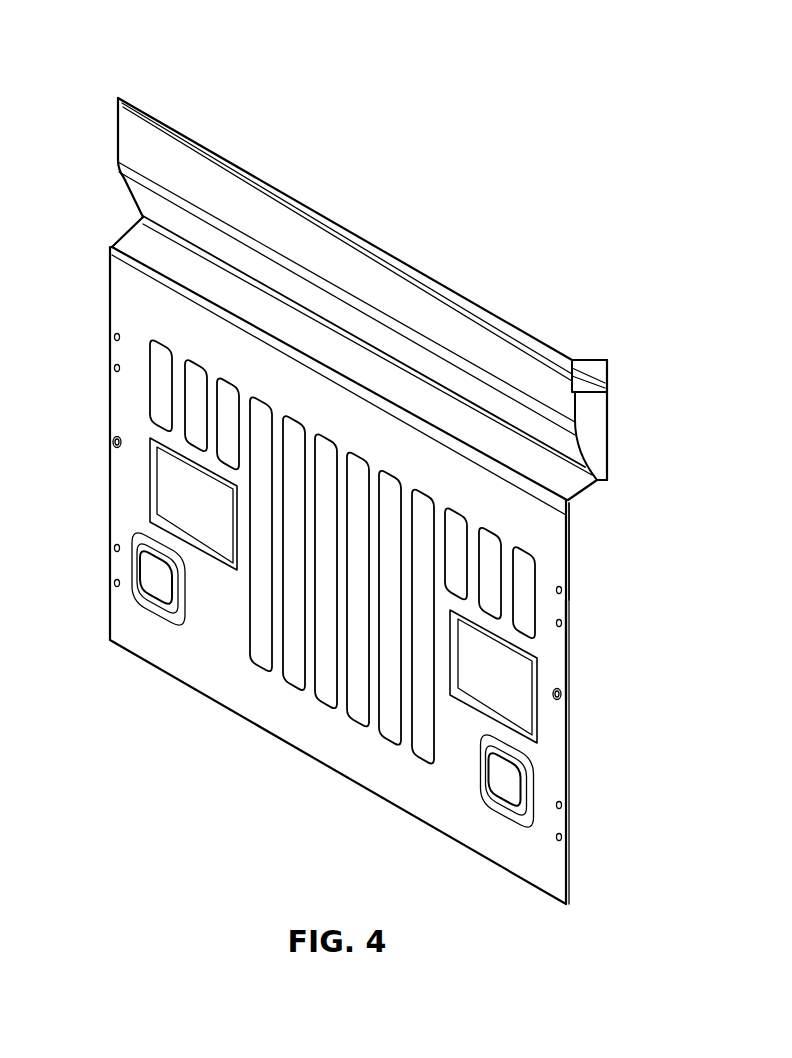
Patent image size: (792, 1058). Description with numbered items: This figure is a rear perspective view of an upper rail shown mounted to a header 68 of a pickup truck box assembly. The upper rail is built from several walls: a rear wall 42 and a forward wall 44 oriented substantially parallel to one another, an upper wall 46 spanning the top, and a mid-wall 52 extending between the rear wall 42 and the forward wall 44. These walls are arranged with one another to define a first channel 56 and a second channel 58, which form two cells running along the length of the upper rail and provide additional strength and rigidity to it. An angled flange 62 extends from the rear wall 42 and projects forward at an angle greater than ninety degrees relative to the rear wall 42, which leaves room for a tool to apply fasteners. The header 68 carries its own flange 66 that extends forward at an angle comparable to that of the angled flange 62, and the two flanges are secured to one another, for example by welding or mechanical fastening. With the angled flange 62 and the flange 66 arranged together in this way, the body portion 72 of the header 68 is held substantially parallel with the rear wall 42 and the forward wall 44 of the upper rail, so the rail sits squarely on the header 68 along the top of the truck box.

The forward wall 44 is at (343, 600).
The upper wall 46 is at (291, 190).
The rear wall 42 is at (607, 407).
The mid-wall 52 is at (588, 395).
The first channel 56 is at (598, 368).
The second channel 58 is at (597, 442).
The angled flange 62 is at (569, 484).
The flange 66 is at (568, 505).
The header 68 is at (565, 661).
The body portion 72 is at (567, 588).